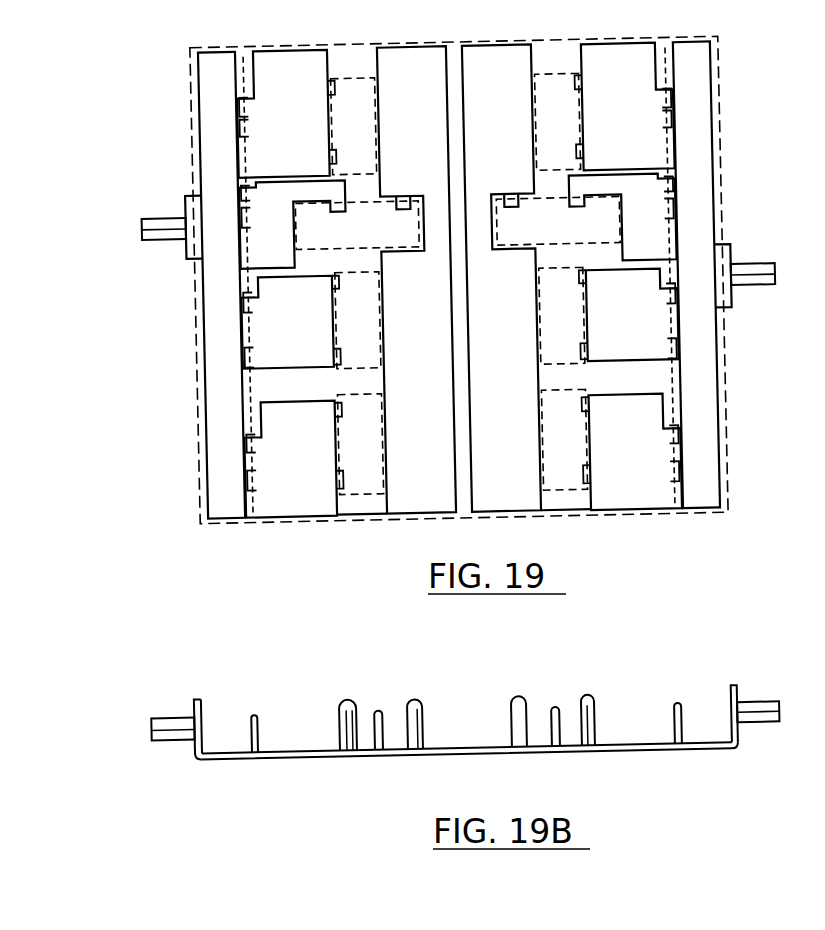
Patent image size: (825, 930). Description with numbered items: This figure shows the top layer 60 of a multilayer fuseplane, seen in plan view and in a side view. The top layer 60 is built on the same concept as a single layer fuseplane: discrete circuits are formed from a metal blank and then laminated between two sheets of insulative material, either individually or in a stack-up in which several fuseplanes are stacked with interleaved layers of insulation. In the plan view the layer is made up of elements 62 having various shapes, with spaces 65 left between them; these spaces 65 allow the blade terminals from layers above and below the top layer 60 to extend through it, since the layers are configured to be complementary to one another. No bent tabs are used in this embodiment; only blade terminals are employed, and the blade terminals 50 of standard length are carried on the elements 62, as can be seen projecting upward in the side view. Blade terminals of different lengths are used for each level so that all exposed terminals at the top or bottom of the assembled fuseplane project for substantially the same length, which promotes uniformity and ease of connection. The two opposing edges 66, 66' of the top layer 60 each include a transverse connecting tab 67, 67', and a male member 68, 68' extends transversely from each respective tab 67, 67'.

In FIG. 19, the top layer 60 is at (747, 109).
In FIG. 19B, the top layer 60 is at (431, 768).
In FIG. 19, the elements 62 is at (272, 55).
In FIG. 19, the spaces 65 is at (350, 74).
In FIG. 19, the opposing edge 66 is at (193, 285).
In FIG. 19, the opposing edge 66' is at (724, 266).
In FIG. 19, the transverse connecting tab 67 is at (166, 237).
In FIG. 19B, the transverse connecting tab 67 is at (177, 738).
In FIG. 19, the transverse connecting tab 67' is at (750, 263).
In FIG. 19B, the transverse connecting tab 67' is at (766, 699).
In FIG. 19, the male member 68 is at (158, 210).
In FIG. 19B, the male member 68 is at (173, 711).
In FIG. 19, the male member 68' is at (770, 263).
In FIG. 19B, the male member 68' is at (772, 727).
In FIG. 19B, the blade terminal 50 is at (418, 711).